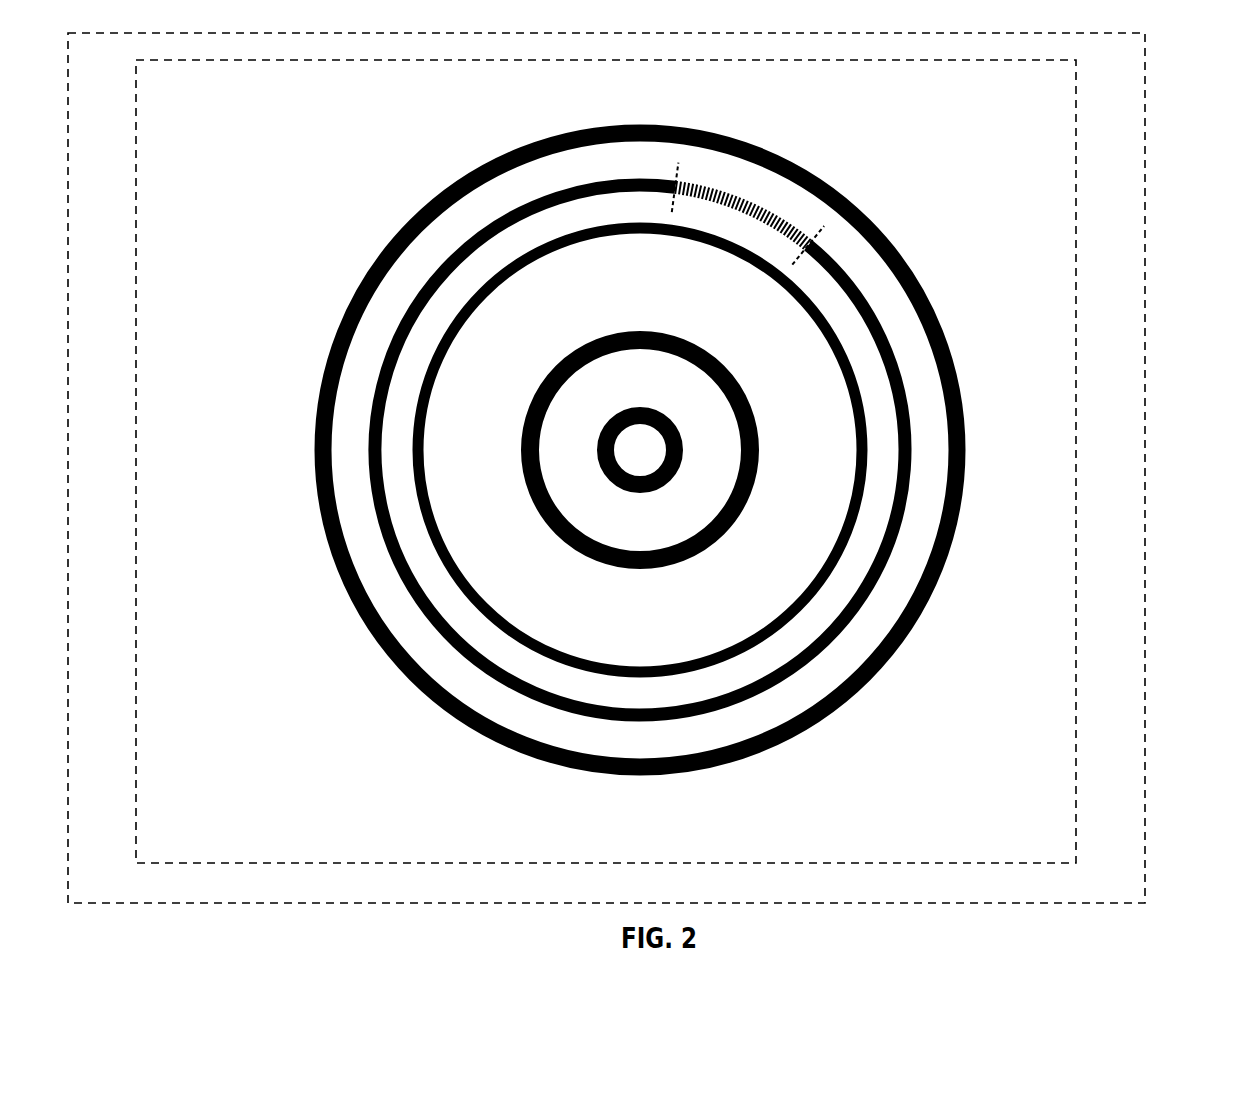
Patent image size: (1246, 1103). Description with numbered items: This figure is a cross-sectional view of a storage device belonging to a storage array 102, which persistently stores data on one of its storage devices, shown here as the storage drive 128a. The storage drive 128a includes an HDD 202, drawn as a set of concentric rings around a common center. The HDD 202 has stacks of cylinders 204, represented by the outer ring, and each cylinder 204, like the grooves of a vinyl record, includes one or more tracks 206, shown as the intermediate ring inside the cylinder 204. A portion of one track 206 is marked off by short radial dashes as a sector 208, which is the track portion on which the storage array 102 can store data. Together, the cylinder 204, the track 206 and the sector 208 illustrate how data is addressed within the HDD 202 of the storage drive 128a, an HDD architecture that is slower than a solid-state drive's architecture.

The storage array 102 is at (1145, 720).
The storage drive 128a is at (629, 825).
The HDD 202 is at (592, 438).
The cylinder 204 is at (427, 692).
The track 206 is at (428, 280).
The sector 208 is at (768, 215).